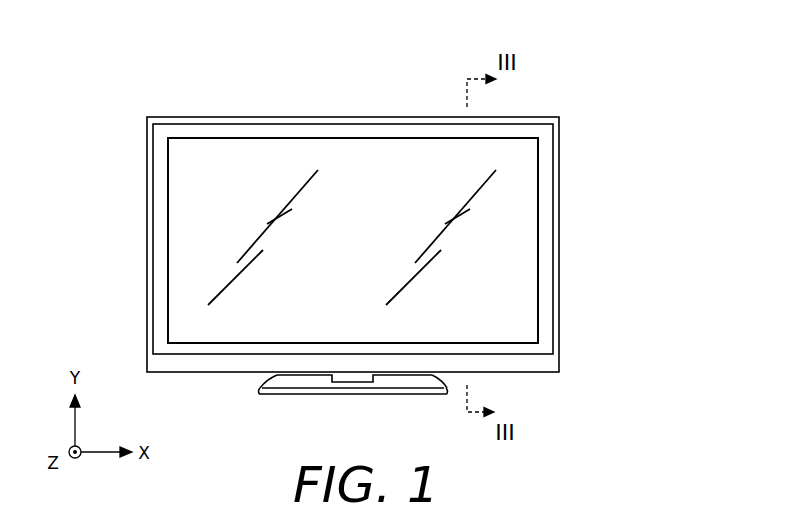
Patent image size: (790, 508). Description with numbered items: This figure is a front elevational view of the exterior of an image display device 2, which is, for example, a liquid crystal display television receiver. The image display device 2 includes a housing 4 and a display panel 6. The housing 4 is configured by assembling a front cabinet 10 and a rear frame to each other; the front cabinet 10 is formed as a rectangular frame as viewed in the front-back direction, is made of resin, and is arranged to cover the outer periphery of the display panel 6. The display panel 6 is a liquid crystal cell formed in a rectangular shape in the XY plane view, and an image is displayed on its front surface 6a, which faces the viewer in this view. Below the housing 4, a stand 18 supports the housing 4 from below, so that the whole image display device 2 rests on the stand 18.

The image display device 2 is at (361, 245).
The housing 4 is at (561, 143).
The display panel 6 is at (308, 201).
The front surface 6a is at (242, 162).
The front cabinet 10 is at (545, 223).
The stand 18 is at (347, 383).